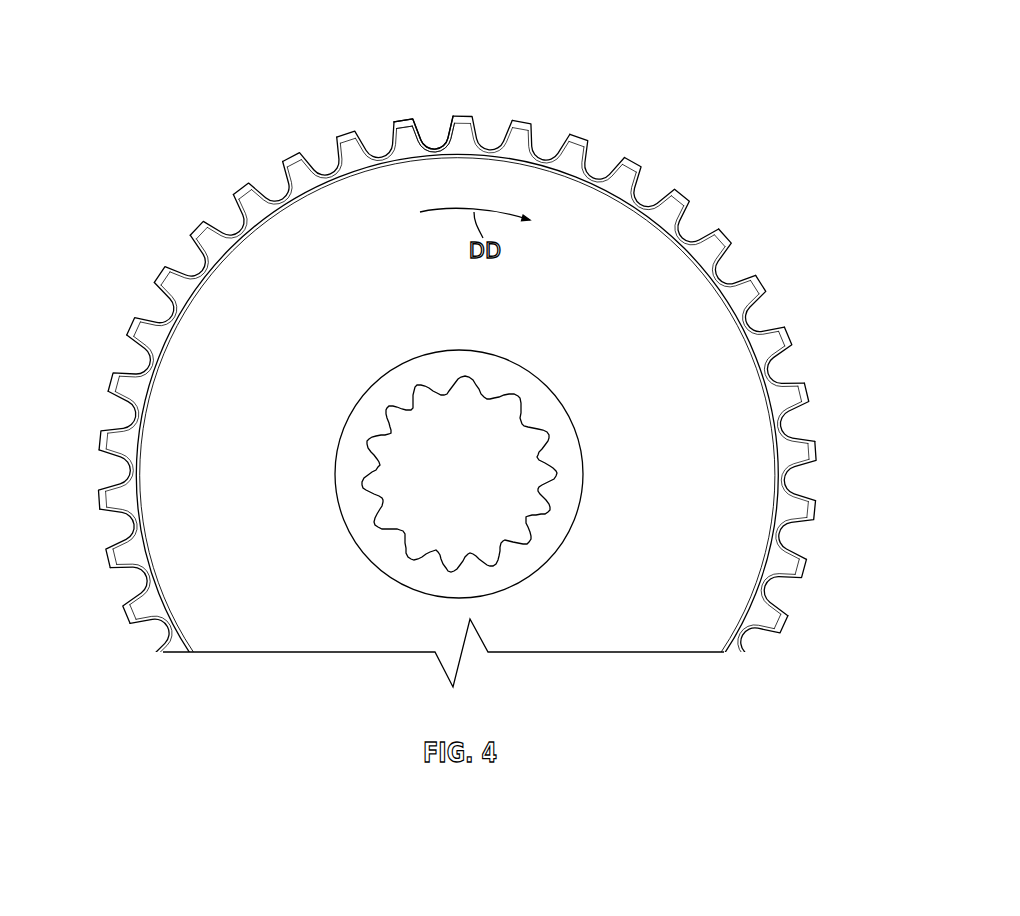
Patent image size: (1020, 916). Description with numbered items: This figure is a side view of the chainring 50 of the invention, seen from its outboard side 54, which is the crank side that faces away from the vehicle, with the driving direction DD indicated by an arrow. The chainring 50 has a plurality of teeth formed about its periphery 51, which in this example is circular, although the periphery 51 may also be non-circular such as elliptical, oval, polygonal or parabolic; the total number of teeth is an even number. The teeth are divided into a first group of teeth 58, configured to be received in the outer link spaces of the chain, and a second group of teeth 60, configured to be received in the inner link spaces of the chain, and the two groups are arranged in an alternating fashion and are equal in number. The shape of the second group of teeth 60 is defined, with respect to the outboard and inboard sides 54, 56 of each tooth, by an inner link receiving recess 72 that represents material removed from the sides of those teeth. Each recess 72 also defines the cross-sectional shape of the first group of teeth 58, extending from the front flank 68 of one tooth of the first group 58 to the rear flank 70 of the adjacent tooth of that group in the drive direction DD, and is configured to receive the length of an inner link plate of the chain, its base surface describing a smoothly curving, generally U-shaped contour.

The chainring 50 is at (687, 310).
The periphery 51 is at (396, 165).
The outboard side 54 is at (358, 157).
The inboard side 56 is at (367, 137).
The first group of teeth 58 is at (518, 120).
The second group of teeth 60 is at (678, 187).
The front flank 68 is at (308, 153).
The rear flank 70 is at (395, 127).
The inner link receiving recess 72 is at (353, 177).